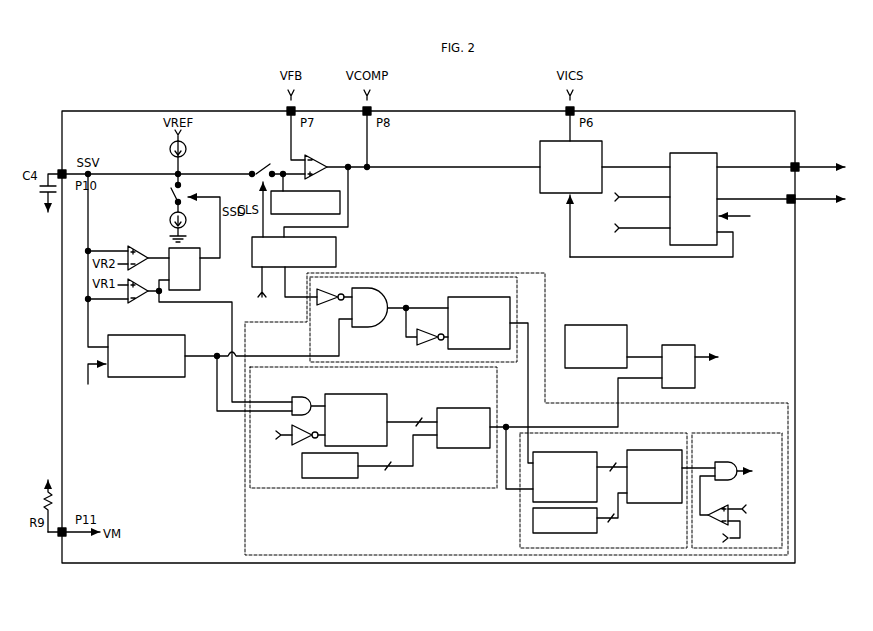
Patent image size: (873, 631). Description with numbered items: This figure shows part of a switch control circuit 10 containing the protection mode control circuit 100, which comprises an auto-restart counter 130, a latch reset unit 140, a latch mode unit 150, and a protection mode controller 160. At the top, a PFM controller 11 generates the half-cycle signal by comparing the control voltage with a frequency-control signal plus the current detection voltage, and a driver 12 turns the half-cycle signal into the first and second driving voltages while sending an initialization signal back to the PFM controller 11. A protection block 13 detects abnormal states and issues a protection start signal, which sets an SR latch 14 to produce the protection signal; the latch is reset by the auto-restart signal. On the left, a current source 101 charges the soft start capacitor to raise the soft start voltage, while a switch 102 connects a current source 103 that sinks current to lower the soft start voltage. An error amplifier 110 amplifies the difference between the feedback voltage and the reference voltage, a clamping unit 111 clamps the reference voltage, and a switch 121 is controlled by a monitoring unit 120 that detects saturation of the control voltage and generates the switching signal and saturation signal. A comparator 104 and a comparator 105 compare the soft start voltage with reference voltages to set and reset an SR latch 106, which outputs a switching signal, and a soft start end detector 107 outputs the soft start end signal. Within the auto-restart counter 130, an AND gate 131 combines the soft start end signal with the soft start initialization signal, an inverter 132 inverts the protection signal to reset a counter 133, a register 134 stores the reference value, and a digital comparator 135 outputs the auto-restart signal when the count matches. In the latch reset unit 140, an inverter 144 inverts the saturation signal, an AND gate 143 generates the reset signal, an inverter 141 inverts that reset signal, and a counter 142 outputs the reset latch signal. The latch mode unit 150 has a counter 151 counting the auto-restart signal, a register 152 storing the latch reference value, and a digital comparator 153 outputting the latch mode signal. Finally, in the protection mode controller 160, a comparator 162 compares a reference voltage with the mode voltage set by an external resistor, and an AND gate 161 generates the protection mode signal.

The switch control circuit IC 10 is at (661, 111).
The PFM controller 11 is at (540, 150).
The driver 12 is at (693, 153).
The protection block 13 is at (591, 325).
The SR latch 14 is at (678, 345).
The protection mode control circuit 100 is at (245, 491).
The current source 101 is at (170, 150).
The switch 102 is at (171, 192).
The current source 103 is at (170, 220).
The comparator 104 is at (133, 249).
The comparator 105 is at (138, 303).
The SR latch 106 is at (200, 280).
The soft start end detector 107 is at (146, 378).
The error amplifier 110 is at (321, 155).
The clamping unit 111 is at (340, 203).
The monitoring unit 120 is at (336, 253).
The switch 121 is at (261, 165).
The auto-restart counter 130 is at (430, 488).
The AND gate 131 is at (299, 397).
The inverter 132 is at (300, 446).
The counter 133 is at (346, 394).
The register 134 is at (329, 478).
The digital comparator 135 is at (468, 408).
The latch reset unit 140 is at (425, 273).
The inverter 141 is at (416, 344).
The counter 142 is at (479, 297).
The AND gate 143 is at (362, 327).
The inverter 144 is at (328, 306).
The latch mode unit 150 is at (520, 502).
The counter 151 is at (533, 478).
The register 152 is at (533, 527).
The digital comparator 153 is at (656, 503).
The protection mode controller 160 is at (733, 433).
The AND gate 161 is at (722, 462).
The comparator 162 is at (716, 505).